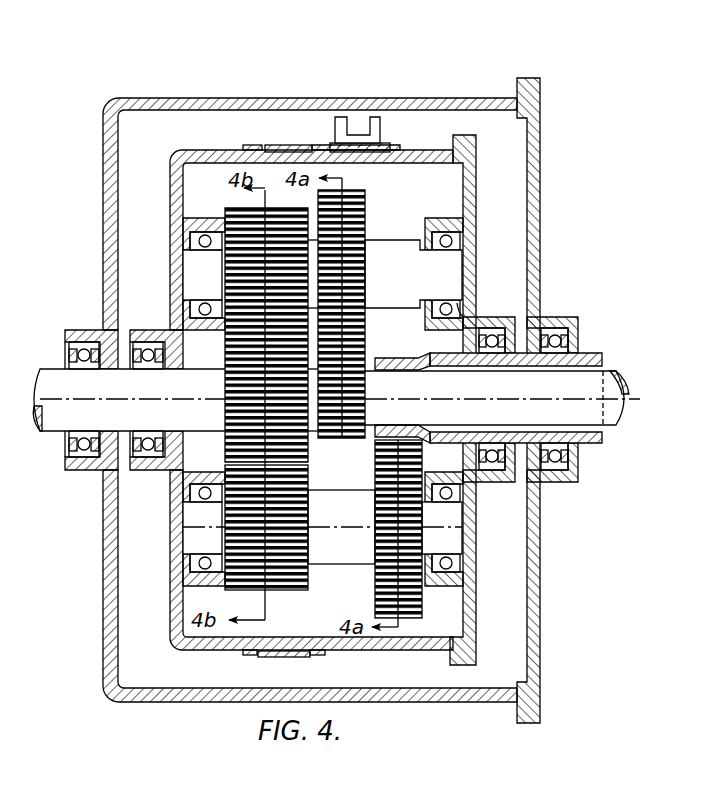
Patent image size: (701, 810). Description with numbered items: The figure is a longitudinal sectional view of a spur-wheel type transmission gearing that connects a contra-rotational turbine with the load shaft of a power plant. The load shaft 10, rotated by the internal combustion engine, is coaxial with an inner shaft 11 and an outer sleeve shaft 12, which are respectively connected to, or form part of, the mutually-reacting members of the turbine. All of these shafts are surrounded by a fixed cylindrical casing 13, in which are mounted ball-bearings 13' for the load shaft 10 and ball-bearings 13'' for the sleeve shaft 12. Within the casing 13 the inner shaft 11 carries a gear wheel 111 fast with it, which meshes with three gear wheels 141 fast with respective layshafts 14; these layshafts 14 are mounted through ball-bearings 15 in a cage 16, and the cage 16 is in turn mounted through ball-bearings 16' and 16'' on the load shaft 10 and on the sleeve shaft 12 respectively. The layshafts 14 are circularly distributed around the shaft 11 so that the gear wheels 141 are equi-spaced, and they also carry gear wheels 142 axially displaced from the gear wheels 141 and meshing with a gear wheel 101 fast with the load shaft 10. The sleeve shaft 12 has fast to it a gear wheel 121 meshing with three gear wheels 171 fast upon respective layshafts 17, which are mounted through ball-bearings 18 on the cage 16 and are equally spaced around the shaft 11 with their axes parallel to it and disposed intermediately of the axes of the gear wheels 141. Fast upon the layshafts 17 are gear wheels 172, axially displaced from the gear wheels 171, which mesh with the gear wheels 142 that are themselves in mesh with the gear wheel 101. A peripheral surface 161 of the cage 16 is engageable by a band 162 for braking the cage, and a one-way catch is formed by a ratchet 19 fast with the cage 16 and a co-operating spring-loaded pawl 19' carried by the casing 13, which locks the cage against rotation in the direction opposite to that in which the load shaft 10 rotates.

The load shaft 10 is at (52, 431).
The gear wheel 101 is at (232, 432).
The inner shaft 11 is at (615, 413).
The gear wheel 111 is at (341, 439).
The outer sleeve shaft 12 is at (603, 357).
The gear wheel 121 is at (397, 358).
The casing 13 is at (322, 400).
The ball-bearings 13' is at (61, 391).
The ball-bearings 13'' is at (586, 392).
The layshafts 14 is at (385, 299).
The gear wheels 141 is at (362, 231).
The gear wheels 142 is at (230, 218).
The ball-bearings 15 is at (458, 303).
The cage 16 is at (350, 400).
The peripheral surface 161 is at (250, 147).
The band 162 is at (292, 146).
The ball-bearings 16' is at (146, 428).
The ball-bearings 16'' is at (506, 399).
The layshafts 17 is at (337, 556).
The gear wheels 171 is at (410, 620).
The gear wheels 172 is at (283, 578).
The ball-bearings 18 is at (452, 565).
The ratchet 19 is at (423, 105).
The spring-loaded pawl 19' is at (392, 89).